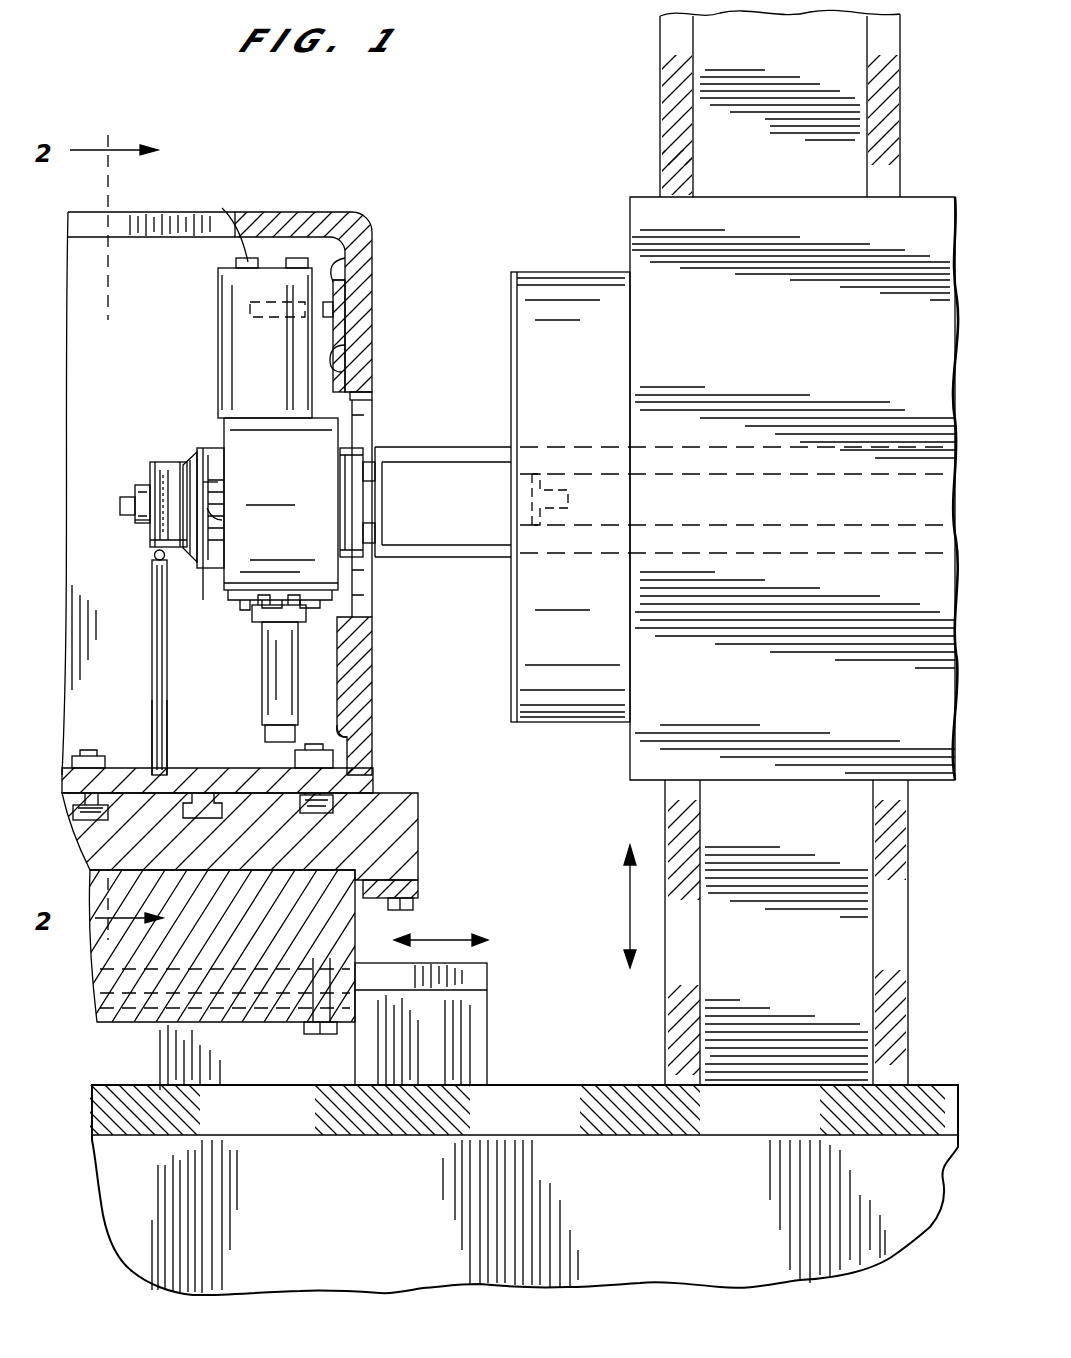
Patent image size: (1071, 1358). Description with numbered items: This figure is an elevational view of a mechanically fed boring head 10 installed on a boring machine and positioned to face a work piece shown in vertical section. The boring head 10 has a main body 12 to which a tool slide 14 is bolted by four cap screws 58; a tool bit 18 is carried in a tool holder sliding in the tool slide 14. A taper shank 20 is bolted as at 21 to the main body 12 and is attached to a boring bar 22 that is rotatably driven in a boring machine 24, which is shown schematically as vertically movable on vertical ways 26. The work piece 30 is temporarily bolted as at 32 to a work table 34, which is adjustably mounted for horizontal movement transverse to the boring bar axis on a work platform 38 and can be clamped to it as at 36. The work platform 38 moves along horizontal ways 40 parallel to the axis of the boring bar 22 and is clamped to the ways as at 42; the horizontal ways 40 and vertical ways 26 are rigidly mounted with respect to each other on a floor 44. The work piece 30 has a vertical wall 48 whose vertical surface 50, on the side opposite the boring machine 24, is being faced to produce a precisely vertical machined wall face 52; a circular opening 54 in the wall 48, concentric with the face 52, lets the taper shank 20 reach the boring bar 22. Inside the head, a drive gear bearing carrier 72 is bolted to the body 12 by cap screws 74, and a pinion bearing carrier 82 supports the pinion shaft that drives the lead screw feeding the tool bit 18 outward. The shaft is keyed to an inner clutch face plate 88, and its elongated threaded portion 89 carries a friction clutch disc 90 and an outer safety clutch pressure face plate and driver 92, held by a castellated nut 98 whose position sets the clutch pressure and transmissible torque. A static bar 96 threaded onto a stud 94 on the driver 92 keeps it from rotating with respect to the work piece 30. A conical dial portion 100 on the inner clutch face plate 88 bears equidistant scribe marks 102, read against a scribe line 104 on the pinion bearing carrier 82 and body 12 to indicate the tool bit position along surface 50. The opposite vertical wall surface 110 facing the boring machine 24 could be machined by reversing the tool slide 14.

The boring head 10 is at (204, 410).
The main body 12 is at (325, 495).
The tool slide 14 is at (218, 295).
The tool bit 18 is at (333, 330).
The taper shank 20 is at (380, 505).
The bolt 21 is at (370, 462).
The boring bar 22 is at (428, 560).
The boring machine 24 is at (820, 336).
The vertical ways 26 is at (882, 40).
The work piece 30 is at (360, 214).
The bolt 32 is at (85, 755).
The work table 34 is at (418, 840).
The clamp 36 is at (415, 905).
The work platform 38 is at (252, 978).
The horizontal ways 40 is at (483, 968).
The clamp 42 is at (328, 1034).
The floor 44 is at (595, 1086).
The vertical wall 48 is at (372, 370).
The vertical surface 50 is at (338, 266).
The machined wall face 52 is at (338, 360).
The circular opening 54 is at (372, 400).
The cap screws 58 is at (220, 223).
The drive gear bearing carrier 72 is at (238, 612).
The cap screws 74 is at (247, 620).
The pinion bearing carrier 82 is at (205, 570).
The inner clutch face plate 88 is at (180, 462).
The elongated threaded portion 89 is at (120, 508).
The friction clutch disc 90 is at (168, 525).
The outer safety clutch pressure face plate and driver 92 is at (150, 470).
The stud 94 is at (156, 560).
The static bar 96 is at (168, 755).
The castellated nut 98 is at (140, 522).
The conical dial portion 100 is at (205, 448).
The scribe marks 102 is at (207, 500).
The scribe line 104 is at (215, 505).
The vertical wall surface 110 is at (362, 305).